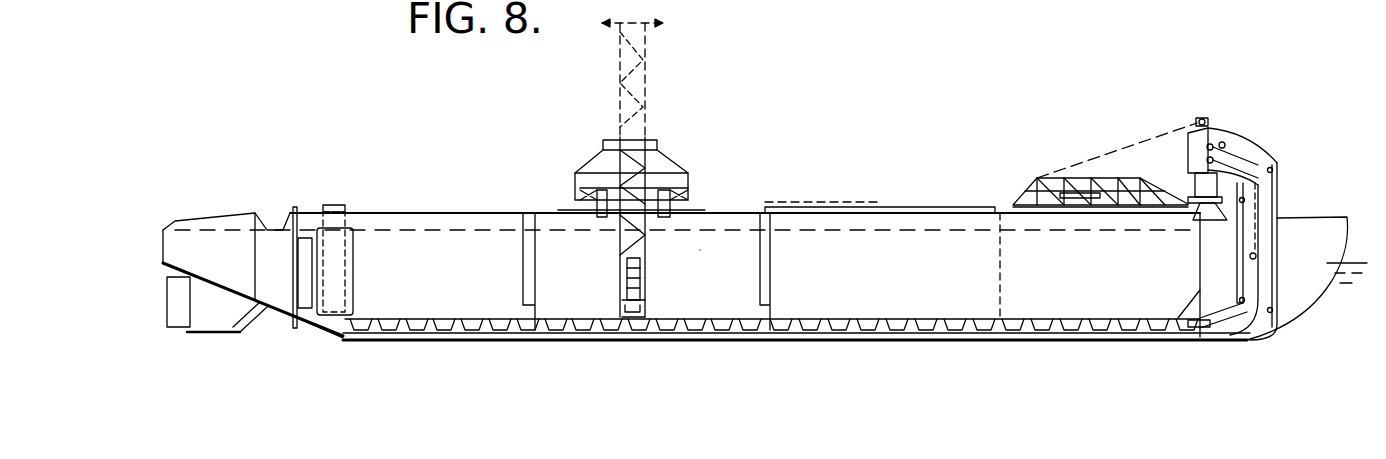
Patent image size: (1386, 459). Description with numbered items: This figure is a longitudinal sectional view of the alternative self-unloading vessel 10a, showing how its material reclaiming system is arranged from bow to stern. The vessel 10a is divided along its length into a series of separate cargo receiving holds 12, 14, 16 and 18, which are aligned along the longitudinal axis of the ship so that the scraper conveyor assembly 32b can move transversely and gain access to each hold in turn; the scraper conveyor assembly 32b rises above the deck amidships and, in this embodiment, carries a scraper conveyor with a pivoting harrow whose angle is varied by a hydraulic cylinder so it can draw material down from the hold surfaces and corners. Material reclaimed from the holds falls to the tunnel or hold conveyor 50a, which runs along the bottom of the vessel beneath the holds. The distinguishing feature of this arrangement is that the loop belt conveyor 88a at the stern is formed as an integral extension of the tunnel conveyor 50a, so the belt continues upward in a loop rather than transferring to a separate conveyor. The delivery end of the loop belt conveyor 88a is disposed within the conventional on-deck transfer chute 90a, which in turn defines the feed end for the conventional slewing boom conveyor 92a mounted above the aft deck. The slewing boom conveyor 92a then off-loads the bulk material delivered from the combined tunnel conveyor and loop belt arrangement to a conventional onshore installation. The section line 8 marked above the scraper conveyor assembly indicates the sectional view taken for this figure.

The mast / tower 8 is at (632, 160).
The self-unloading vessel 10a is at (883, 204).
The cargo receiving hold 12 is at (457, 248).
The cargo receiving hold 14 is at (715, 248).
The cargo receiving hold 16 is at (945, 252).
The cargo receiving hold 18 is at (1050, 257).
The scraper conveyor assembly 32b is at (673, 156).
The tunnel conveyor 50a is at (871, 337).
The loop belt conveyor 88a is at (1248, 268).
The on-deck transfer chute 90a is at (1183, 152).
The slewing boom conveyor 92a is at (1085, 175).